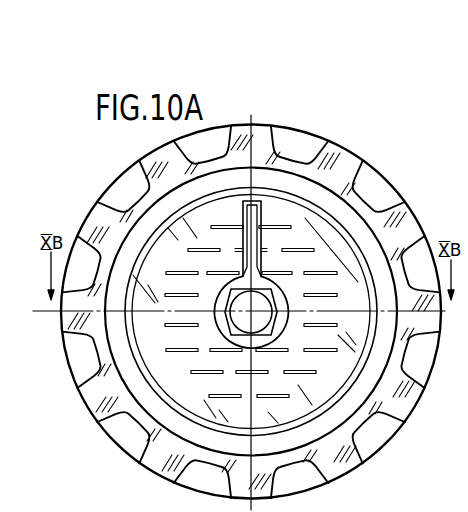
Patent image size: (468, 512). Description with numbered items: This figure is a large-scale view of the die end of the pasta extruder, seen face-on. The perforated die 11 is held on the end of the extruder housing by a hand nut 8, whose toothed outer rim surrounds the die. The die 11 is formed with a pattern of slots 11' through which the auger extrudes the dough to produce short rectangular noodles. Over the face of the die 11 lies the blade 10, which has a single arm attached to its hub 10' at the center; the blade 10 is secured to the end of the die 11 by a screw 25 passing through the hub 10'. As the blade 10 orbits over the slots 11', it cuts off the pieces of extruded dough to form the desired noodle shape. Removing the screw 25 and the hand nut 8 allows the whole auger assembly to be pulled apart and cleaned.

The hand nut 8 is at (165, 453).
The blade 10 is at (312, 193).
The hub 10' is at (331, 262).
The die 11 is at (196, 329).
The slots 11' is at (154, 423).
The screw 25 is at (259, 320).